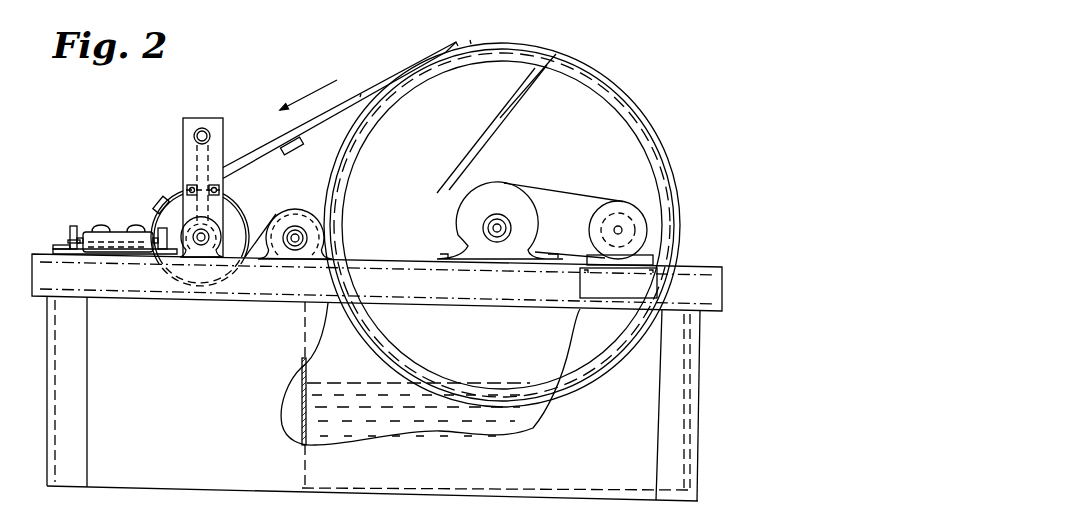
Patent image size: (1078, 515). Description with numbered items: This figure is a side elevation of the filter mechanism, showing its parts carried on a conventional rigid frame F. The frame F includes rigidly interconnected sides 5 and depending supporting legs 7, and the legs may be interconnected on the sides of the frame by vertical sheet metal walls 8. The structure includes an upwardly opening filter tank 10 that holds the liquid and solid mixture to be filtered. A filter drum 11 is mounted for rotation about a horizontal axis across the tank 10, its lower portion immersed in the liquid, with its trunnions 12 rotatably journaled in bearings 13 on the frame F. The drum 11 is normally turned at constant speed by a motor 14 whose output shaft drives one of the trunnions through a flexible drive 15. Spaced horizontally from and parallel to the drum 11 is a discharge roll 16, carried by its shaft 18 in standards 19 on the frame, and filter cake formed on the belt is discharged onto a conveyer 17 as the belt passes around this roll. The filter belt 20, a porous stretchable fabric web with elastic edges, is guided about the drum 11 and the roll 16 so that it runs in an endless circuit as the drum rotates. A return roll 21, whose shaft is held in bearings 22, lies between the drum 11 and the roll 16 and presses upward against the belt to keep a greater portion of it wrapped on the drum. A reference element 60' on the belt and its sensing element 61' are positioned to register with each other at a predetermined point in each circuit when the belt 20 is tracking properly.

The sides 5 is at (377, 282).
The supporting legs 7 is at (65, 393).
The vertical sheet metal walls 8 is at (372, 451).
The filter tank 10 is at (300, 407).
The filter drum 11 is at (603, 128).
The trunnions 12 is at (493, 228).
The bearings 13 is at (473, 247).
The motor 14 is at (592, 228).
The flexible drive 15 is at (565, 196).
The discharge roll 16 is at (247, 211).
The conveyer 17 is at (116, 234).
The shaft 18 is at (185, 258).
The standards 19 is at (188, 203).
The filter belt 20 is at (340, 127).
The return roll 21 is at (312, 221).
The bearings 22 is at (288, 255).
The reference element 60' is at (339, 110).
The sensing element 61' is at (303, 160).
The frame F is at (712, 255).